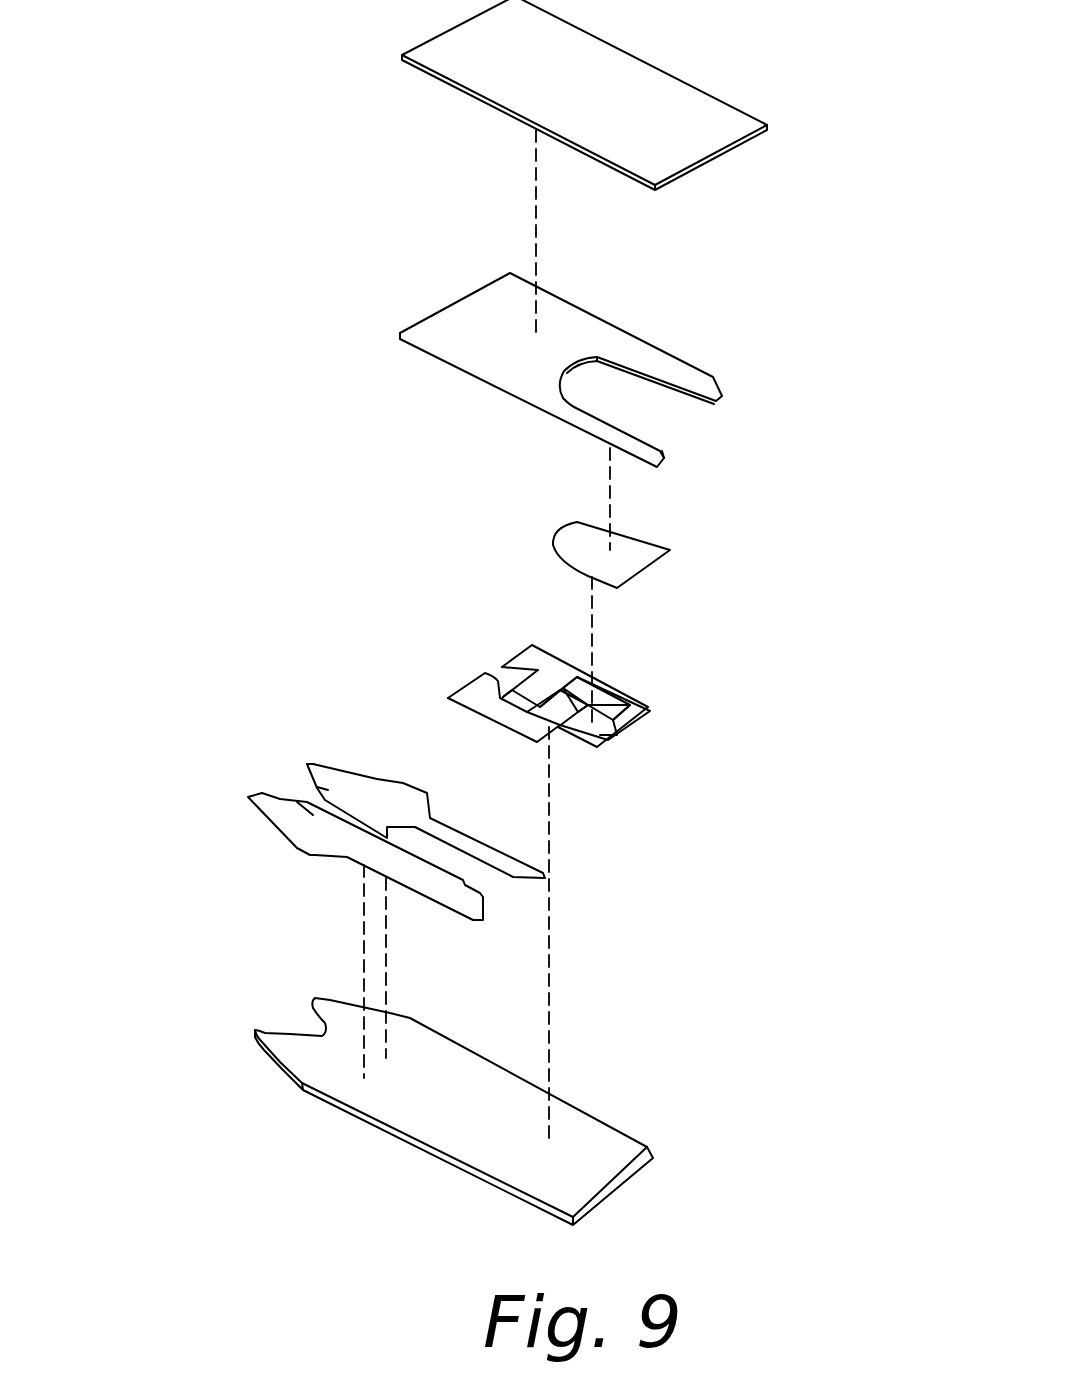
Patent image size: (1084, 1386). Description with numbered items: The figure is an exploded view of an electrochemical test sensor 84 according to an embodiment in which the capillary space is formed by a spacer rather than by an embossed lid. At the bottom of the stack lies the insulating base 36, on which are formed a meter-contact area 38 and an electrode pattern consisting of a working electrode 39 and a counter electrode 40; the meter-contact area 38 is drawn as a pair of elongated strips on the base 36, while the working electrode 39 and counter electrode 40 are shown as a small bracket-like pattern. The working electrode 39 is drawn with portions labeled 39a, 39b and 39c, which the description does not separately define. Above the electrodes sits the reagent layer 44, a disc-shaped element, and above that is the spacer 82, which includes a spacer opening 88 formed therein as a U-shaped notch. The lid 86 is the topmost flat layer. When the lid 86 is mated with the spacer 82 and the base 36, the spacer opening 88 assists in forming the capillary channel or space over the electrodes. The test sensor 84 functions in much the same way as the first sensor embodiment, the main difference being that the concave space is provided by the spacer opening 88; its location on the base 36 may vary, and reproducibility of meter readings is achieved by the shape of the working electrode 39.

The electrochemical test sensor 84 is at (167, 238).
The lid 86 is at (682, 93).
The spacer 82 is at (462, 315).
The spacer opening 88 is at (685, 420).
The reagent layer 44 is at (580, 540).
The counter electrode 40 is at (557, 642).
The working electrode 39 is at (470, 692).
The first arm of contact spring 39a is at (617, 735).
The second arm of contact spring 39b is at (558, 728).
The third arm of contact spring 39c is at (590, 698).
The meter-contact area 38 is at (262, 762).
The base 36 is at (652, 1148).